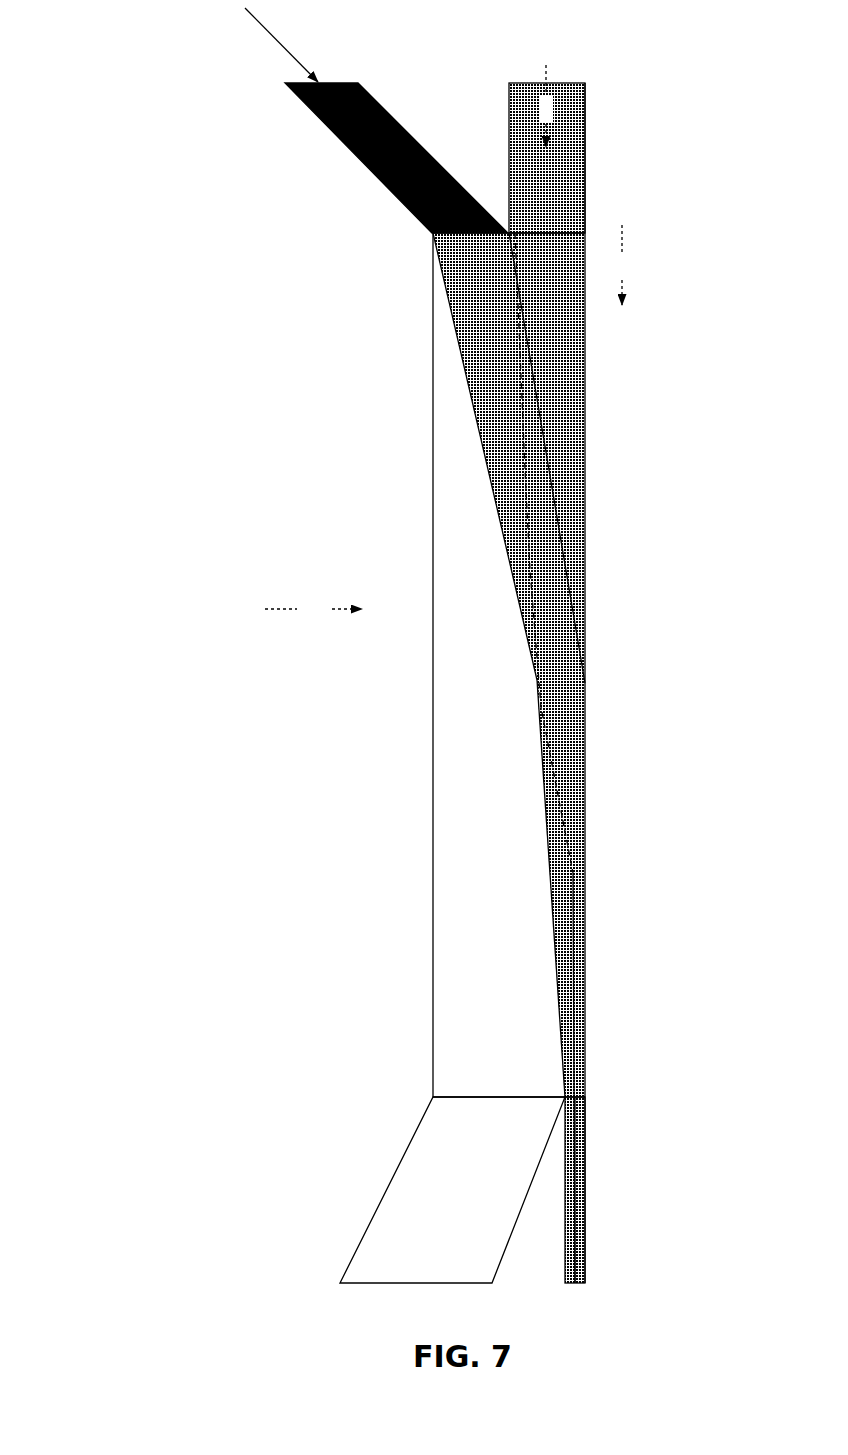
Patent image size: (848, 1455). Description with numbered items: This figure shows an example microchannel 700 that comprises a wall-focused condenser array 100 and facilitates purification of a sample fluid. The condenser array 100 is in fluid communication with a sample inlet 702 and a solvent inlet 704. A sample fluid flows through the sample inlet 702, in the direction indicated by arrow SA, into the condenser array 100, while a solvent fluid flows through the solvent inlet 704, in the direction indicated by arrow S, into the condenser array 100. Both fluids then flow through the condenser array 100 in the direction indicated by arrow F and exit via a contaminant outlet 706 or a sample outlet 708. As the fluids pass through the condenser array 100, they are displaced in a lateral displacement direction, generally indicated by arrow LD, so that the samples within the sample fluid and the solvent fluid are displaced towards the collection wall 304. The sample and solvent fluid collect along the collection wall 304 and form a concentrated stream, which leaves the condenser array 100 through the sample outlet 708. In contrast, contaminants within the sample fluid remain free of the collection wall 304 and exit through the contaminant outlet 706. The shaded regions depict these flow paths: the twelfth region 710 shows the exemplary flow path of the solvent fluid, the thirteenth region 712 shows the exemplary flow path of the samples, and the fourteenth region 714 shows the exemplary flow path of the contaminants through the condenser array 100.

The microchannel 700 is at (162, 56).
The sample inlet 702 is at (350, 160).
The solvent inlet 704 is at (587, 136).
The contaminant outlet 706 is at (386, 1188).
The sample outlet 708 is at (599, 1203).
The twelfth region 710 is at (558, 418).
The thirteenth region 712 is at (490, 364).
The fourteenth region 714 is at (450, 446).
The condenser array 100 is at (424, 279).
The collection wall 304 is at (591, 606).